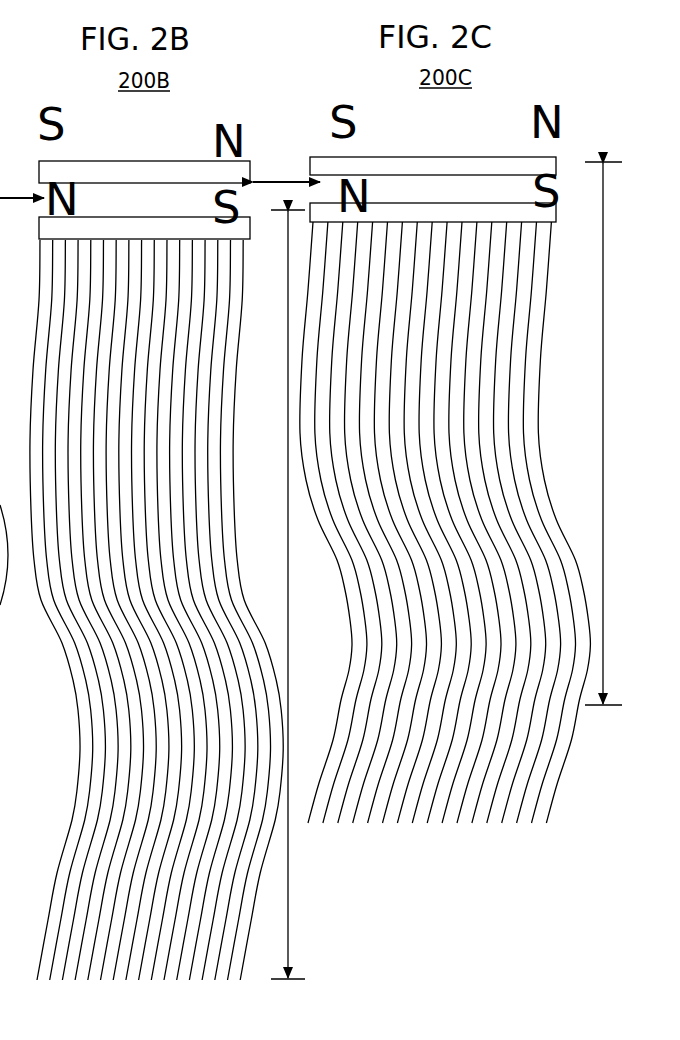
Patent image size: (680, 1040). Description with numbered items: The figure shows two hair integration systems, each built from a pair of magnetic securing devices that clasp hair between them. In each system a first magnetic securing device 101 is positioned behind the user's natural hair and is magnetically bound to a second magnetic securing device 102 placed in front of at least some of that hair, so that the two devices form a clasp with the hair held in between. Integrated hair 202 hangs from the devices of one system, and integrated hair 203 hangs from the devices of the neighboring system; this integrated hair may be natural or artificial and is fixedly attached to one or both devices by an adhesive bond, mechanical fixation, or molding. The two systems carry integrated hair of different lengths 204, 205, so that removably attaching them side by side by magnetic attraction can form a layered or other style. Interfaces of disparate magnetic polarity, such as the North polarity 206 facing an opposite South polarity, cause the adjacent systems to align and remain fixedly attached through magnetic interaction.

In FIG. 2B, the first magnetic securing device 101 is at (144, 157).
In FIG. 2C, the first magnetic securing device 101 is at (433, 155).
In FIG. 2B, the second magnetic securing device 102 is at (144, 226).
In FIG. 2C, the second magnetic securing device 102 is at (433, 206).
In FIG. 2B, the integrated hair 202 is at (156, 624).
In FIG. 2C, the integrated hair 203 is at (445, 539).
In FIG. 2B, the length of integrated hair 204 is at (299, 594).
In FIG. 2B, the field length dimension 205 is at (22, 181).
In FIG. 2C, the field length dimension 205 is at (612, 433).
In FIG. 2C, the North polarity 206 is at (286, 166).